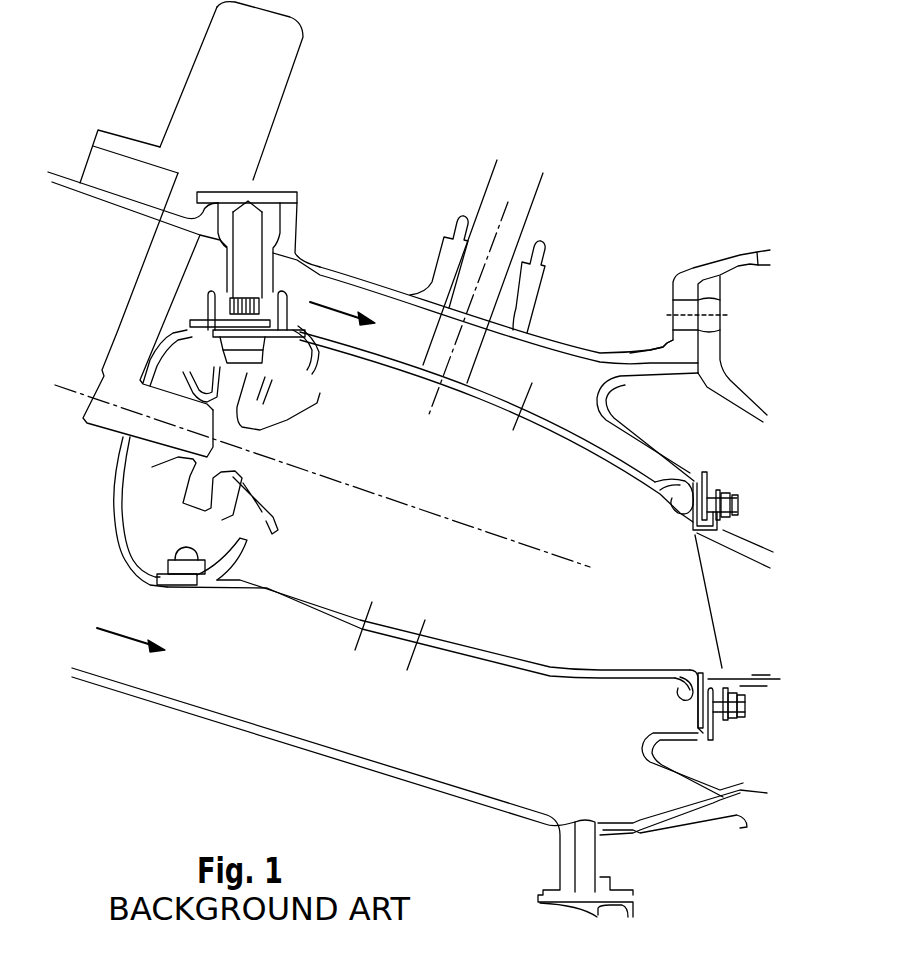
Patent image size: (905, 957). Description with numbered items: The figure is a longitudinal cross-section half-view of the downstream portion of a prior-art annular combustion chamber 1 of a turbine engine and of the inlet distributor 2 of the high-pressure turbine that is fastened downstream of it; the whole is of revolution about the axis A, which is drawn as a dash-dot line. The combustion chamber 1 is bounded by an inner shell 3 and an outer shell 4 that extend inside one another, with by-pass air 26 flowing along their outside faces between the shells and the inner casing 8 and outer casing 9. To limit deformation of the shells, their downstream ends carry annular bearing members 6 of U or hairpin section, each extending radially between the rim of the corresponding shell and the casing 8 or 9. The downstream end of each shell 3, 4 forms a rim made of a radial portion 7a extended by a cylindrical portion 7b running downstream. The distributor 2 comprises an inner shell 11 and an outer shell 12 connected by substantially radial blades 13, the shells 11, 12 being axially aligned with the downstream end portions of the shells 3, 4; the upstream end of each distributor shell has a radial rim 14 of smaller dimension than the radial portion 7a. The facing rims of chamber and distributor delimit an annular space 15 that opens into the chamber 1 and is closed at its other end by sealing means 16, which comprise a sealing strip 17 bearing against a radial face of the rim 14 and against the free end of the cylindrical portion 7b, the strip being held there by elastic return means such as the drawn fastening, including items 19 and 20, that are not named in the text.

The annular combustion chamber 1 is at (383, 212).
The inlet distributor 2 is at (770, 512).
The inner shell 3 is at (547, 670).
The outer shell 4 is at (560, 427).
The bearing member 6 is at (633, 437).
The radial portion 7a is at (680, 487).
The cylindrical portion 7b is at (704, 470).
The inner casing 8 is at (393, 773).
The outer casing 9 is at (553, 347).
The inner shell of the distributor 11 is at (755, 678).
The outer shell of the distributor 12 is at (753, 552).
The radial blades 13 is at (735, 623).
The radial rim 14 is at (693, 523).
The annular space 15 is at (680, 480).
The sealing means 16 is at (715, 466).
The sealing strip 17 is at (722, 485).
The nut 19 is at (745, 505).
The diagonal wall 20 is at (710, 540).
The by-pass air 26 is at (330, 300).
The axis of revolution A is at (331, 483).